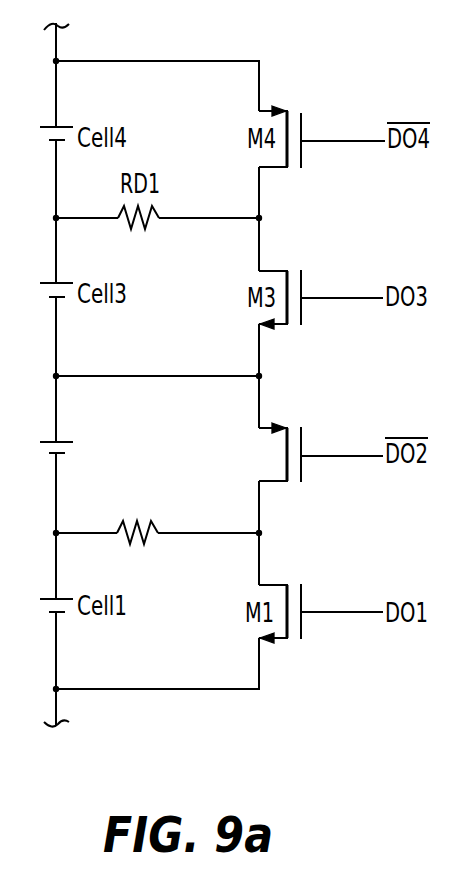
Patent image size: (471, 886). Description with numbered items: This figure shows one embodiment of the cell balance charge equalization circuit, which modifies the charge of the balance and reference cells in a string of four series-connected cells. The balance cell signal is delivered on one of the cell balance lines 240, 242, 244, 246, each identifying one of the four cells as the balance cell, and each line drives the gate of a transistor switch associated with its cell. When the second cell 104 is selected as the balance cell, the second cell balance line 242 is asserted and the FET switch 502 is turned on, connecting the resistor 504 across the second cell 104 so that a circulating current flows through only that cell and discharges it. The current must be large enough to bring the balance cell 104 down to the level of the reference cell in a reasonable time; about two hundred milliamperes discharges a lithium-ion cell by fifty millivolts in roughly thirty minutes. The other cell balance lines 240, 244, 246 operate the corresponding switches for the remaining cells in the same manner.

The cell 2 104 is at (66, 440).
The FET switch 502 is at (287, 444).
The resistor 504 is at (153, 523).
The cell balance line 240 is at (365, 612).
The cell balance line (Do2) 242 is at (367, 456).
The cell balance line 244 is at (367, 298).
The cell balance line 246 is at (368, 141).